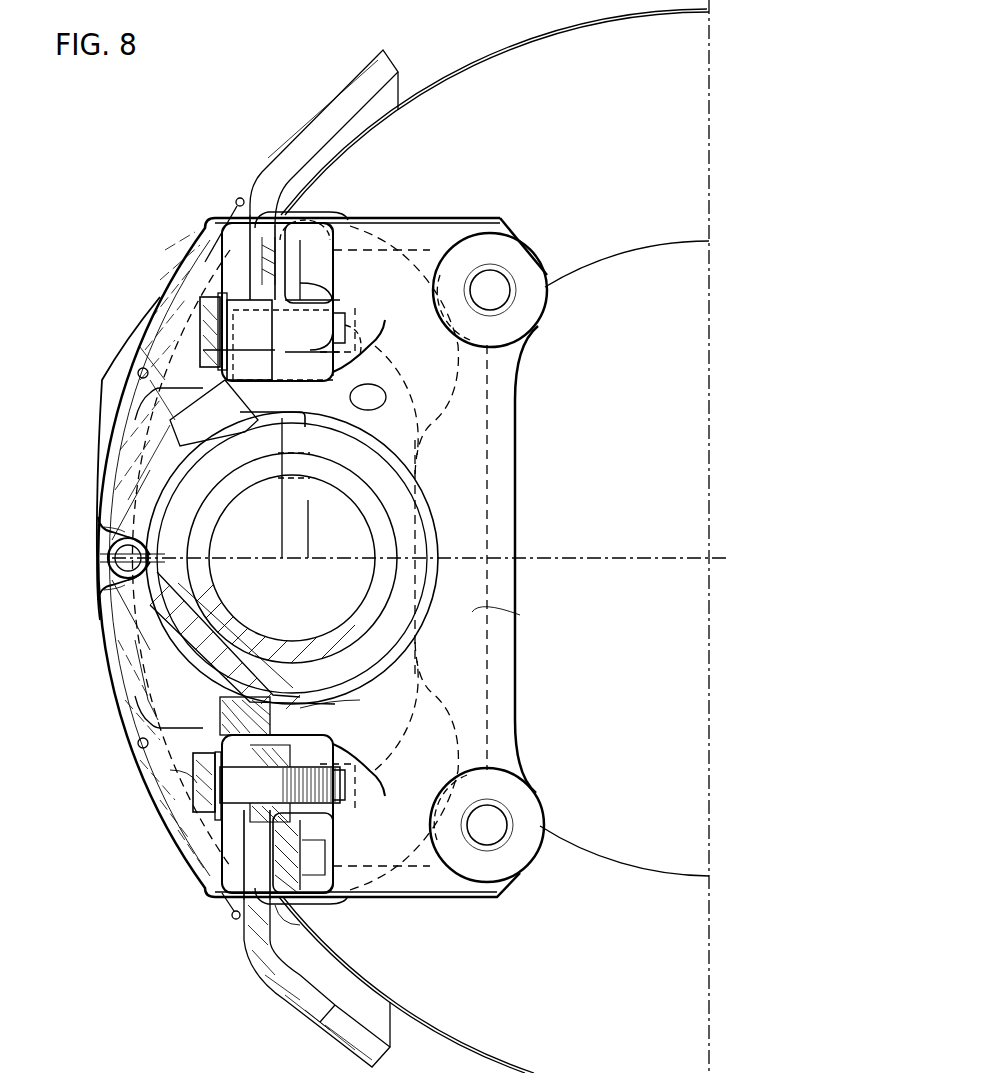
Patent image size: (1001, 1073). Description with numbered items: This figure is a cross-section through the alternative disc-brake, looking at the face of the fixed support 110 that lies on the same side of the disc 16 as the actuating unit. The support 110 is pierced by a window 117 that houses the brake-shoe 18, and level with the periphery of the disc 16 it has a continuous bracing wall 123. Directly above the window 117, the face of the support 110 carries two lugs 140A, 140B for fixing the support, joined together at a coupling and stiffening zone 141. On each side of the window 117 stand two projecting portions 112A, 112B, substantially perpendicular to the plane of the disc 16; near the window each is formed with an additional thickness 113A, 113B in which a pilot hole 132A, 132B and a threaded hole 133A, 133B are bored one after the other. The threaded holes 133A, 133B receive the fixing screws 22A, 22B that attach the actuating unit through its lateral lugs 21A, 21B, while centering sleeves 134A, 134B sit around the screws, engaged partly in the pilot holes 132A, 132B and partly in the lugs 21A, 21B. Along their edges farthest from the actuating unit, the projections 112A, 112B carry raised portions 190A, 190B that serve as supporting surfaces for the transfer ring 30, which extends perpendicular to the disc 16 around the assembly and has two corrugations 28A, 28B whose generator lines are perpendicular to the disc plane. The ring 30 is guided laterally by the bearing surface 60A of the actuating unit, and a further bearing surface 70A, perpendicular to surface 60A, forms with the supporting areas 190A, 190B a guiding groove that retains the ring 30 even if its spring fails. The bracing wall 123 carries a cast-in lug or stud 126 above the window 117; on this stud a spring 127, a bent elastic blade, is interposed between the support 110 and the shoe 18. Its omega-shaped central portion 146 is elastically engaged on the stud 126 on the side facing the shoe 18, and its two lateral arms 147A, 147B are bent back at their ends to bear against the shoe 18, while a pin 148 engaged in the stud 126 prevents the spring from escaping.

The disc 16 is at (446, 82).
The brake-shoe 18 is at (150, 393).
The transfer ring 30 is at (318, 95).
The corrugation 28A is at (261, 185).
The corrugation 28B is at (230, 902).
The lug 21A is at (230, 290).
The lug 21B is at (220, 824).
The fixing screw 22A is at (202, 307).
The fixing screw 22B is at (200, 783).
The bearing surface 60A is at (296, 420).
The bearing surface 70A is at (287, 415).
The fixed support 110 is at (518, 505).
The projecting portion 112A is at (322, 218).
The projecting portion 112B is at (305, 868).
The additional thickness 113A is at (333, 367).
The additional thickness 113B is at (340, 808).
The window 117 is at (360, 386).
The bracing wall 123 is at (107, 625).
The lug 126 is at (110, 543).
The spring 127 is at (98, 578).
The pilot hole 132A is at (298, 414).
The pilot hole 132B is at (293, 796).
The threaded hole 133A is at (325, 301).
The threaded hole 133B is at (332, 716).
The centering sleeve 134A is at (303, 284).
The centering sleeve 134B is at (274, 735).
The lug 140A is at (523, 313).
The lug 140B is at (508, 855).
The coupling and stiffening zone 141 is at (472, 612).
The central portion 146 is at (150, 540).
The lateral arm 147A is at (167, 398).
The lateral arm 147B is at (140, 682).
The pin 148 is at (102, 553).
The raised portion 190A is at (268, 220).
The raised portion 190B is at (270, 908).